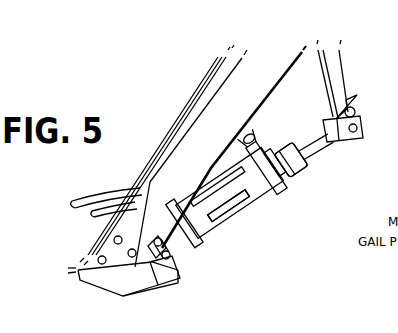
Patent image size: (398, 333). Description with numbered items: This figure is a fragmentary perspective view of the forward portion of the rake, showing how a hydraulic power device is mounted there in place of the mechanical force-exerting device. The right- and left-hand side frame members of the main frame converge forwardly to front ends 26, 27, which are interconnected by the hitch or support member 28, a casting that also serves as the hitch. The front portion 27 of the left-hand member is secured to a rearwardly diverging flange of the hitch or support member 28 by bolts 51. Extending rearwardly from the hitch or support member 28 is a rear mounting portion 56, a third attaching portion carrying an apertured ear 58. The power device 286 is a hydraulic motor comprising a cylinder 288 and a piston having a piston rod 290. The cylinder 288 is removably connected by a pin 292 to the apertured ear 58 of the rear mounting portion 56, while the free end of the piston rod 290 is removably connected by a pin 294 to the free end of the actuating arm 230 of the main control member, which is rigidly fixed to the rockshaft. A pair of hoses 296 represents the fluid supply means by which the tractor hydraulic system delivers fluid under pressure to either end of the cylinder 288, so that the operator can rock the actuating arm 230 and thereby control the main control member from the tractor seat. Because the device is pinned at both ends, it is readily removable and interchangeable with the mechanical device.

The front end of right-hand side frame member 26 is at (205, 83).
The front end of left-hand side frame member 27 is at (205, 118).
The hitch or support member 28 is at (140, 302).
The bolts 51 is at (113, 240).
The rear mounting portion 56 is at (155, 283).
The apertured ear 58 is at (155, 272).
The actuating arm 230 is at (342, 82).
The power device 286 is at (238, 226).
The cylinder 288 is at (250, 212).
The piston rod 290 is at (312, 162).
The pin 292 is at (175, 253).
The pin 294 is at (368, 118).
The hoses 296 is at (82, 203).